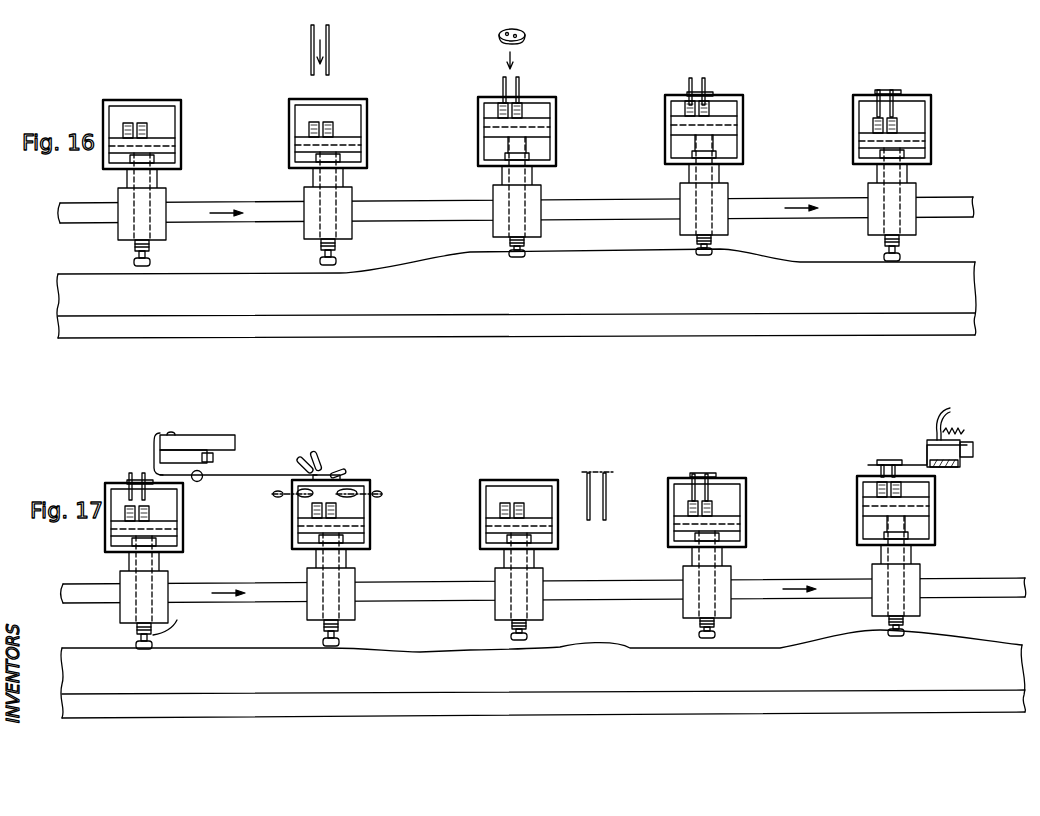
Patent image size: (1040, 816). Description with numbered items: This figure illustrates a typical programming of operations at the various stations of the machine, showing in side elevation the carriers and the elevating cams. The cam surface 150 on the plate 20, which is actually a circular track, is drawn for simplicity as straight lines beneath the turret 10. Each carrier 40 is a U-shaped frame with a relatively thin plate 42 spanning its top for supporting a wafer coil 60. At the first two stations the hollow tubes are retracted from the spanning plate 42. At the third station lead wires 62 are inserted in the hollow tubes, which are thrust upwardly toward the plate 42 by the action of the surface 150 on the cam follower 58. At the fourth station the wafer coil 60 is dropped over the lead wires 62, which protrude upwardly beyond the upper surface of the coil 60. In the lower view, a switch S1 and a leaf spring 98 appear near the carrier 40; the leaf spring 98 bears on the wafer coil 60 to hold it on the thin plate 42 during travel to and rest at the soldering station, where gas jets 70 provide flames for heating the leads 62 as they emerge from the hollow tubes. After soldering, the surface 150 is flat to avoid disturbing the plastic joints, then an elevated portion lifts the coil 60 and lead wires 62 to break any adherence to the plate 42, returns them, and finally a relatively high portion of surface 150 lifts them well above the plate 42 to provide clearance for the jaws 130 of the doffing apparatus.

In FIG. 16, the turret 10 is at (415, 207).
In FIG. 17, the turret 10 is at (441, 587).
In FIG. 16, the plate 20 is at (195, 326).
In FIG. 17, the plate 20 is at (205, 702).
In FIG. 16, the U-shaped frame 40 is at (527, 156).
In FIG. 17, the U-shaped frame 40 is at (520, 549).
In FIG. 16, the thin plate 42 is at (113, 98).
In FIG. 16, the cam follower 58 is at (345, 267).
In FIG. 17, the cam follower 58 is at (520, 632).
In FIG. 16, the wafer coil 60 is at (527, 34).
In FIG. 17, the wafer coil 60 is at (611, 474).
In FIG. 16, the lead wires 62 is at (330, 35).
In FIG. 17, the lead wires 62 is at (608, 508).
In FIG. 17, the gas jets 70 is at (283, 497).
In FIG. 17, the leaf spring 98 is at (257, 478).
In FIG. 17, the jaws 130 is at (912, 456).
In FIG. 16, the cam surface 150 is at (272, 251).
In FIG. 17, the cam surface 150 is at (250, 653).
In FIG. 17, the switch S1 is at (206, 461).